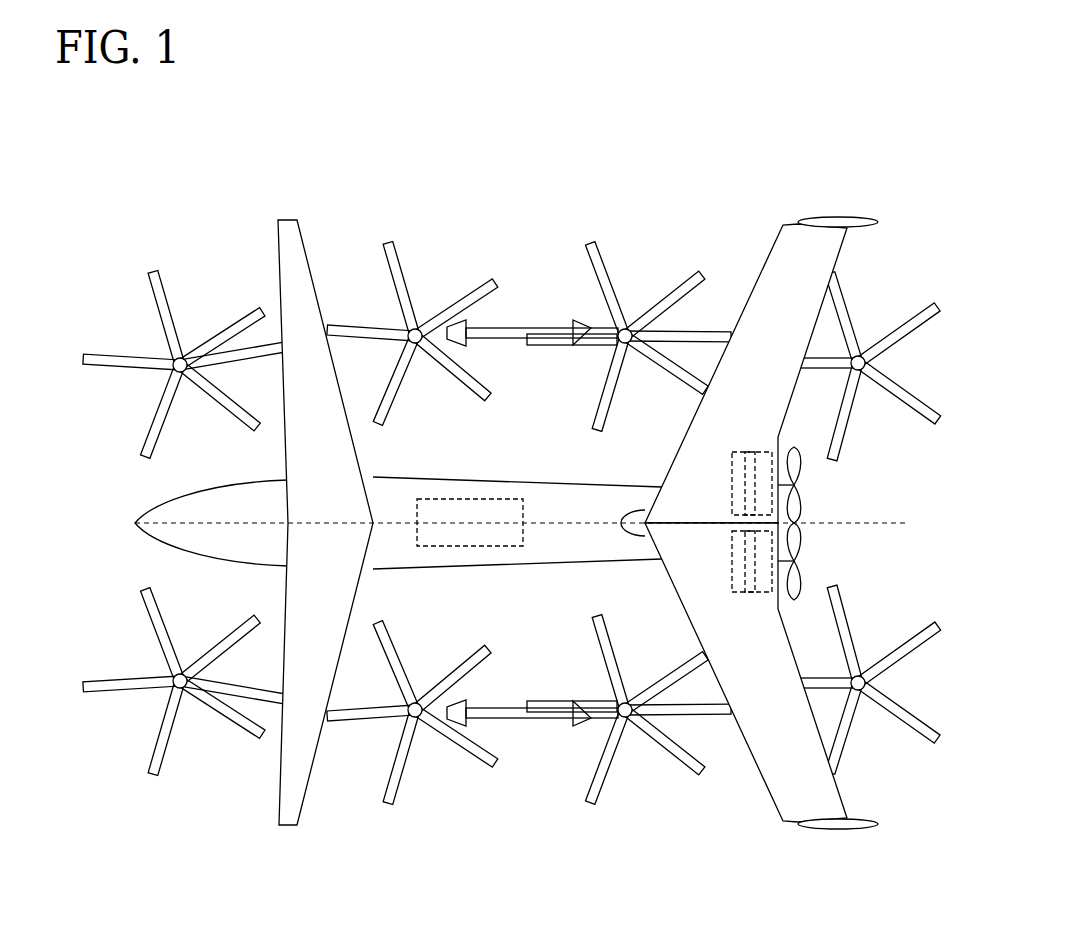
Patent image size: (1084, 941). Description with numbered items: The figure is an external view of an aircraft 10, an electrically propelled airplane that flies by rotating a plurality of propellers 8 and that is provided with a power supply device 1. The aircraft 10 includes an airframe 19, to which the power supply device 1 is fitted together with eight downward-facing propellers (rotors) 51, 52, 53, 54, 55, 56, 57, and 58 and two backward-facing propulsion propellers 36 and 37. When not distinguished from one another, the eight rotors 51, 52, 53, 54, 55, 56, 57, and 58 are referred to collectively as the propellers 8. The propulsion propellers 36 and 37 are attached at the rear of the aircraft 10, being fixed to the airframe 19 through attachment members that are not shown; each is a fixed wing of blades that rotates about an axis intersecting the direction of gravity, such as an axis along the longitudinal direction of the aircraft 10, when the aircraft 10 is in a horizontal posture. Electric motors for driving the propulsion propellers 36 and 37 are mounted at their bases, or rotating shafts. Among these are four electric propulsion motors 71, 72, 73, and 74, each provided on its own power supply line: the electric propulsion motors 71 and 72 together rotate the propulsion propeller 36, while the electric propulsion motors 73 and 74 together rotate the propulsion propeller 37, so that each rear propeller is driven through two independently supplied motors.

The power supply device 1 is at (490, 498).
The propellers 8 is at (90, 345).
The aircraft 10 is at (728, 200).
The airframe 19 is at (150, 505).
The propulsion propeller 36 is at (800, 580).
The propulsion propeller 37 is at (800, 463).
The propeller 51 is at (168, 752).
The propeller 52 is at (174, 322).
The propeller 53 is at (405, 775).
The propeller 54 is at (405, 272).
The propeller 55 is at (607, 775).
The propeller 56 is at (608, 270).
The propeller 57 is at (910, 733).
The propeller 58 is at (912, 315).
The electric propulsion motor 71 is at (762, 595).
The electric propulsion motor 72 is at (732, 560).
The electric propulsion motor 73 is at (757, 452).
The electric propulsion motor 74 is at (730, 487).